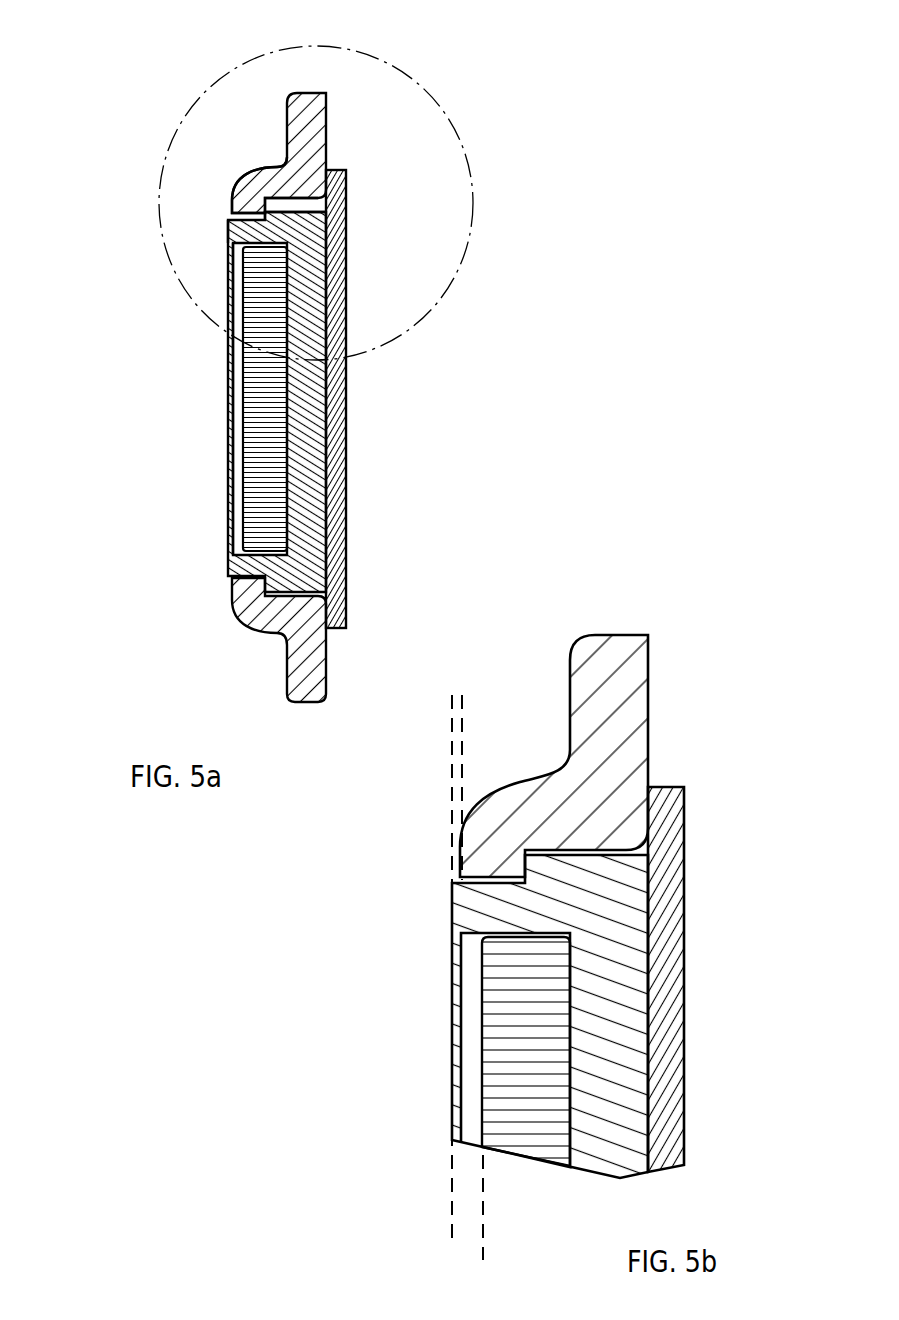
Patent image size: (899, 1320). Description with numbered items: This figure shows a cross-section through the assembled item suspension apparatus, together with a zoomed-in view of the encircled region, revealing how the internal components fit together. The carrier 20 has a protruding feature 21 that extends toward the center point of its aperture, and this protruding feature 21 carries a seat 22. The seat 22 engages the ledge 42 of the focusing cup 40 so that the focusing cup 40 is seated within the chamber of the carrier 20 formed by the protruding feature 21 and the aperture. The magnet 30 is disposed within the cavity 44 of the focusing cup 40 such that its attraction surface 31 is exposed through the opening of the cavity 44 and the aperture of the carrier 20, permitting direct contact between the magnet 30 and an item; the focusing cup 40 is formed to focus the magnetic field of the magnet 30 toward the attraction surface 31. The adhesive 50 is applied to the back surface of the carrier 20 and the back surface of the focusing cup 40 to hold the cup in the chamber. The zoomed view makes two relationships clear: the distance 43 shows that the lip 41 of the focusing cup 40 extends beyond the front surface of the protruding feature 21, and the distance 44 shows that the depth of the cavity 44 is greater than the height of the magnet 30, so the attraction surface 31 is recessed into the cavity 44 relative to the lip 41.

In FIG. 5a, the carrier 20 is at (305, 128).
In FIG. 5b, the carrier 20 is at (618, 773).
In FIG. 5a, the protruding feature 21 is at (256, 162).
In FIG. 5a, the seat 22 is at (250, 204).
In FIG. 5a, the magnet 30 is at (260, 415).
In FIG. 5b, the magnet 30 is at (535, 1113).
In FIG. 5a, the attraction surface 31 is at (243, 315).
In FIG. 5a, the focusing cup 40 is at (310, 430).
In FIG. 5b, the focusing cup 40 is at (615, 972).
In FIG. 5a, the lip 41 is at (227, 232).
In FIG. 5a, the ledge 42 is at (285, 217).
In FIG. 5b, the distance 43 is at (495, 753).
In FIG. 5b, the cavity 44 is at (517, 1205).
In FIG. 5a, the adhesive 50 is at (338, 360).
In FIG. 5b, the adhesive 50 is at (666, 979).